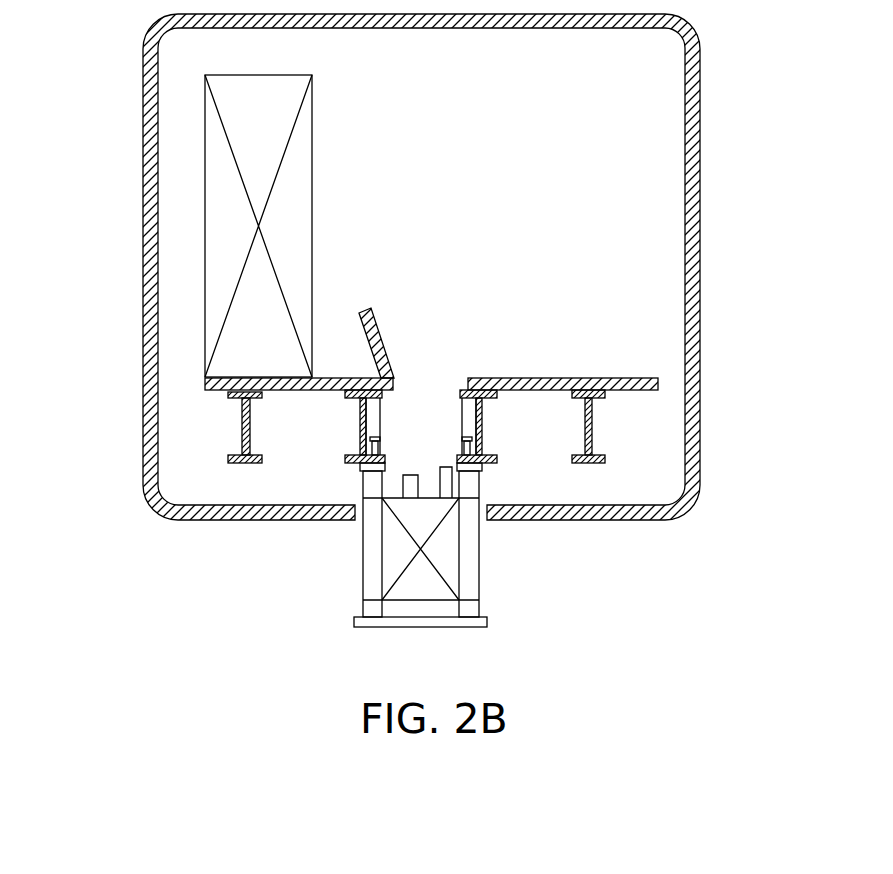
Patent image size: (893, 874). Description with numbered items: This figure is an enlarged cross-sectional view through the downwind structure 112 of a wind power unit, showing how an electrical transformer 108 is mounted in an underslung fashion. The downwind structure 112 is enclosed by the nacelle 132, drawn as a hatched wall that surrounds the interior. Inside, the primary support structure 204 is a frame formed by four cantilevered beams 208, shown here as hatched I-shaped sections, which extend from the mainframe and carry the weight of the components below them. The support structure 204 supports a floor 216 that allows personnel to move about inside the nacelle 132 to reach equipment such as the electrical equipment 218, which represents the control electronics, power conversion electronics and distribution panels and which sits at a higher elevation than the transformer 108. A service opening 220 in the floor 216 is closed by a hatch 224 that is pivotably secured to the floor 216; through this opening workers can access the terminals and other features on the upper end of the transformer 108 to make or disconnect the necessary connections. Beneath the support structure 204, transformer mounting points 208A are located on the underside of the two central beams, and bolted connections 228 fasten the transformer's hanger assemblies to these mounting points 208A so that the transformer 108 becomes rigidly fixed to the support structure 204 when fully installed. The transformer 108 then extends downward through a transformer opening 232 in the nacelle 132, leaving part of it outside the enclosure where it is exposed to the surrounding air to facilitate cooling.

The electrical transformer 108 is at (352, 558).
The downwind structure 112 is at (416, 267).
The nacelle 132 is at (700, 167).
The primary support structure 204 is at (193, 448).
The cantilevered beams 208 is at (242, 422).
The transformer mounting points 208A is at (356, 470).
The floor 216 is at (560, 376).
The electrical equipment 218 is at (312, 163).
The service opening 220 is at (451, 382).
The hatch 224 is at (376, 322).
The bolted connections 228 is at (456, 455).
The transformer opening 232 is at (484, 520).